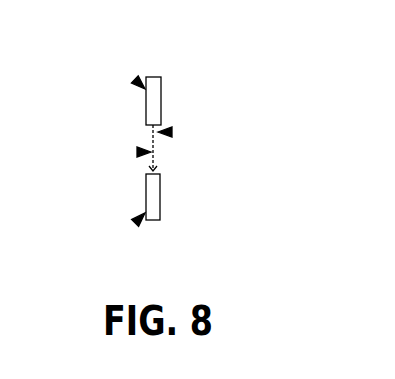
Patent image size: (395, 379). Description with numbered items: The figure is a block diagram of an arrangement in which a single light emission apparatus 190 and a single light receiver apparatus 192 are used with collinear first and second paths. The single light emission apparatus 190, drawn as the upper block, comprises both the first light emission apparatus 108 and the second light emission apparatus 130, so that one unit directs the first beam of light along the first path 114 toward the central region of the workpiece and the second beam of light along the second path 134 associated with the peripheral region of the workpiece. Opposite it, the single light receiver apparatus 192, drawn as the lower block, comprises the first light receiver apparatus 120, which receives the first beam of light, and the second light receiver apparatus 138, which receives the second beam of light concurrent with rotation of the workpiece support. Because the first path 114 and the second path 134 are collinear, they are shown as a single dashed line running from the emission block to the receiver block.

The first light emission apparatus 108 is at (162, 90).
The second light emission apparatus 130 is at (162, 98).
The single light emission apparatus 190 is at (135, 80).
The first path 114 is at (172, 132).
The second path 134 is at (137, 152).
The second light receiver apparatus 138 is at (160, 190).
The first light receiver apparatus 120 is at (160, 214).
The single light receiver apparatus 192 is at (135, 223).